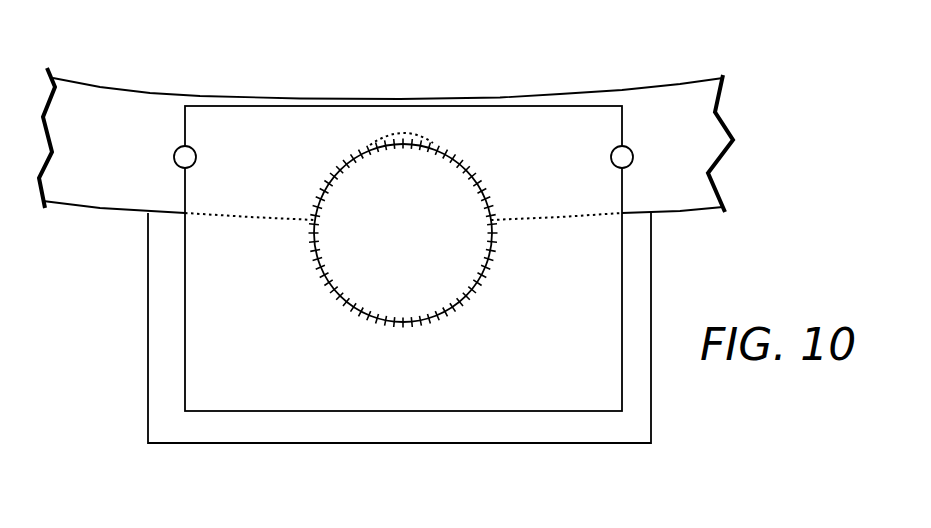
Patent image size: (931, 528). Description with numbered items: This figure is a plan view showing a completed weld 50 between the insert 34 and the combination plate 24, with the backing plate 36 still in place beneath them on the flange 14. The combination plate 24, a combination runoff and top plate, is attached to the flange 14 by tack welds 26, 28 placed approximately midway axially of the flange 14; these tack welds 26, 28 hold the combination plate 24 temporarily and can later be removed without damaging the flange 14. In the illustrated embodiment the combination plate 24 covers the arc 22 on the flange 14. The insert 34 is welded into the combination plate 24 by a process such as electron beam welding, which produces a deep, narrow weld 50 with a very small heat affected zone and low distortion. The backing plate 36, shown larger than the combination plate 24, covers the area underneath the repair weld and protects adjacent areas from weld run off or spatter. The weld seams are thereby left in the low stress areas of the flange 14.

The flange 14 is at (103, 175).
The arc 22 is at (418, 135).
The combination plate 24 is at (409, 390).
The tack weld 26 is at (625, 160).
The tack weld 28 is at (180, 163).
The insert 34 is at (317, 253).
The backing plate 36 is at (638, 342).
The completed weld 50 is at (465, 300).